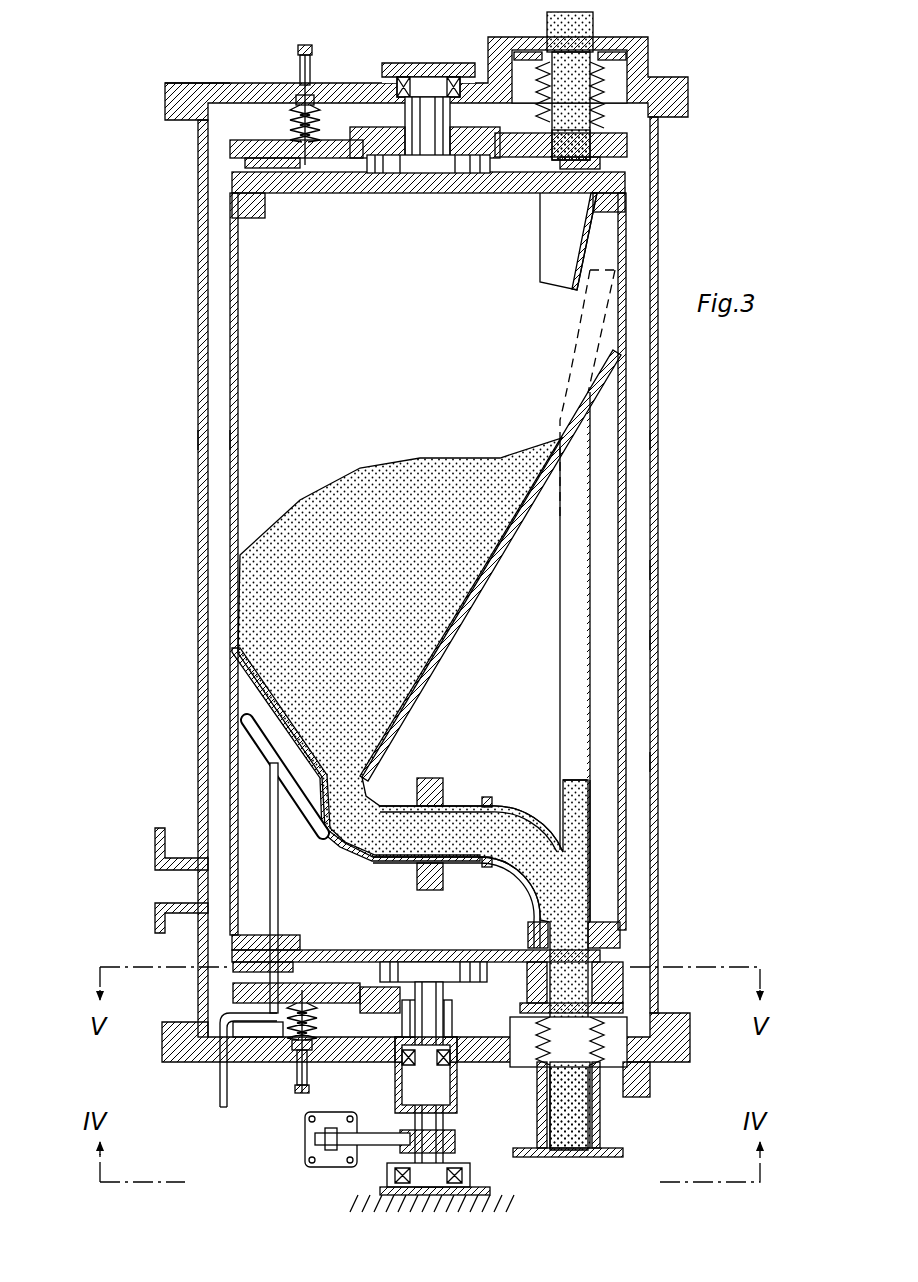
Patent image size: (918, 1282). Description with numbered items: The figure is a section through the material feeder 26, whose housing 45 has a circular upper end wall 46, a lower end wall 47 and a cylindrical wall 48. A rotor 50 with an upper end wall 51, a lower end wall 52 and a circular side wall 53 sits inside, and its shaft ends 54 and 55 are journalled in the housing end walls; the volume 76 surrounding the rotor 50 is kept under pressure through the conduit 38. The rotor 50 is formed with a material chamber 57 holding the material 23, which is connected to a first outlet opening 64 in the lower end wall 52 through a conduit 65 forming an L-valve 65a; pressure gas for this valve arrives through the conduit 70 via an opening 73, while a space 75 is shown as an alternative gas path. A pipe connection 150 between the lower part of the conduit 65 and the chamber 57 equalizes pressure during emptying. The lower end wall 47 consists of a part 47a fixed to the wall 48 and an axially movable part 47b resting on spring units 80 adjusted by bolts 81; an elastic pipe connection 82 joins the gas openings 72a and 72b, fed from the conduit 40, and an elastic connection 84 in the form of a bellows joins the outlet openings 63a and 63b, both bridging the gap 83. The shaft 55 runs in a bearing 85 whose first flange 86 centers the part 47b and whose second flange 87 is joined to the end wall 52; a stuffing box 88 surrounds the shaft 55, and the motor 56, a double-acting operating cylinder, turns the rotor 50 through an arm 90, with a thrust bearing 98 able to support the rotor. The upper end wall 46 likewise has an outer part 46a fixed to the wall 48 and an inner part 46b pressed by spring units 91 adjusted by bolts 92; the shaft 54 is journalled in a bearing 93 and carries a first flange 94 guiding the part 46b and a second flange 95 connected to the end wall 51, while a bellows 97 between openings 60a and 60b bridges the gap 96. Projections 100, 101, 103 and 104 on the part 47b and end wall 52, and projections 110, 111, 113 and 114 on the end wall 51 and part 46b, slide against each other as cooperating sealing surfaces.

The material 23 is at (257, 594).
The material feeder 26 is at (661, 440).
The conduit 38 is at (198, 828).
The conduit 40 is at (214, 1100).
The housing 45 is at (661, 571).
The upper end wall 46 is at (690, 91).
The outer part 46a is at (166, 83).
The inner part 46b is at (237, 152).
The lower end wall 47 is at (656, 1095).
The part 47a is at (681, 1043).
The part 47b is at (623, 991).
The cylindrical wall 48 is at (650, 642).
The rotor 50 is at (229, 676).
The upper end wall 51 is at (340, 180).
The lower end wall 52 is at (338, 952).
The circular side wall 53 is at (627, 400).
The shaft end 54 is at (420, 112).
The shaft end 55 is at (428, 1115).
The motor 56 is at (327, 1158).
The material chamber 57 is at (270, 432).
The opening 60a is at (555, 24).
The opening 60b is at (607, 143).
The opening 63a is at (580, 1156).
The opening 63b is at (600, 1023).
The first outlet opening 64 is at (623, 943).
The conduit 65 is at (457, 807).
The L-valve 65a is at (380, 810).
The conduit 70 is at (279, 868).
The opening 72a is at (213, 1067).
The opening 72b is at (258, 993).
The opening 73 is at (260, 957).
The space 75 is at (613, 707).
The volume 76 is at (650, 762).
The spring units 80 is at (307, 1030).
The bolts 81 is at (293, 1090).
The elastic pipe connection 82 is at (237, 1026).
The gap 83 is at (353, 1020).
The elastic connection 84 is at (650, 1073).
The bearing 85 is at (458, 1060).
The first flange 86 is at (425, 1010).
The second flange 87 is at (382, 968).
The stuffing box 88 is at (399, 1099).
The arm 90 is at (373, 1146).
The spring units 91 is at (290, 115).
The bolts 92 is at (300, 52).
The bearing 93 is at (473, 70).
The first flange 94 is at (388, 165).
The second flange 95 is at (376, 132).
The gap 96 is at (503, 115).
The bellows 97 is at (610, 80).
The thrust bearing 98 is at (470, 1175).
The projection 100 is at (528, 948).
The projection 101 is at (260, 978).
The projection 103 is at (630, 957).
The projection 104 is at (297, 948).
The projection 110 is at (610, 161).
The projection 111 is at (250, 163).
The projection 113 is at (623, 176).
The projection 114 is at (257, 178).
The pipe connection 150 is at (580, 510).